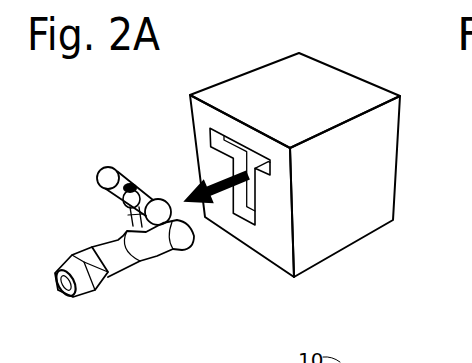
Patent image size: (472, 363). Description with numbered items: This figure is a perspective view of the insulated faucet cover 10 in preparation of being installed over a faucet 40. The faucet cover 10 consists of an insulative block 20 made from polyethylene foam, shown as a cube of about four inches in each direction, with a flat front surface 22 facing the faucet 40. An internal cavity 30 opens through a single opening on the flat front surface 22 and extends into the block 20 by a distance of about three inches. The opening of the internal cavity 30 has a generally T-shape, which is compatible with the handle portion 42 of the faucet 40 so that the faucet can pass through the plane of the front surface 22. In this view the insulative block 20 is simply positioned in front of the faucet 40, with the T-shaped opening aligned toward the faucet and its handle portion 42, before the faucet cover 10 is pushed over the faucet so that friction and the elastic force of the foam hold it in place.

The insulated faucet cover 10 is at (342, 33).
The insulative block 20 is at (355, 212).
The flat front surface 22 is at (268, 243).
The internal cavity 30 is at (233, 165).
The faucet 40 is at (142, 253).
The handle portion 42 is at (97, 184).